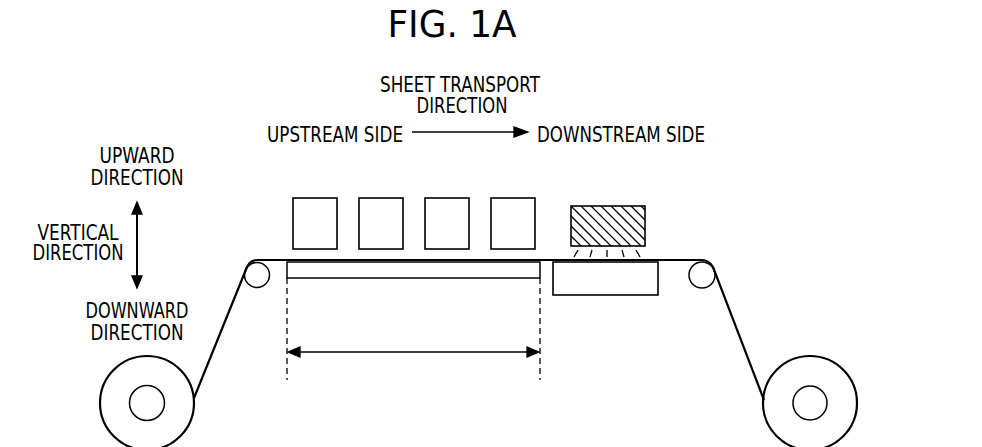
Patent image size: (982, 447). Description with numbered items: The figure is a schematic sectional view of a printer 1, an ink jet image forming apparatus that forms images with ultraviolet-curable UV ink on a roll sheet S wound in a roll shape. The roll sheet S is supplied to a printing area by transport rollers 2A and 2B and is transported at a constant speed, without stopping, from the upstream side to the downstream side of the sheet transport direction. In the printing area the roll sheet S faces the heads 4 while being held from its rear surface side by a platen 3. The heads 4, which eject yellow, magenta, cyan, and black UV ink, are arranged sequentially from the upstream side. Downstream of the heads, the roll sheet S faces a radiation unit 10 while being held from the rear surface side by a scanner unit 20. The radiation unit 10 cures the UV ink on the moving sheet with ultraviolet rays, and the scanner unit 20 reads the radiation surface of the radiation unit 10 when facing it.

The printer 1 is at (748, 196).
The roll sheet S is at (271, 258).
The transport roller 2A is at (257, 288).
The transport roller 2B is at (702, 289).
The platen 3 is at (412, 280).
The heads 4 is at (314, 198).
The radiation unit 10 is at (608, 206).
The scanner unit 20 is at (608, 296).